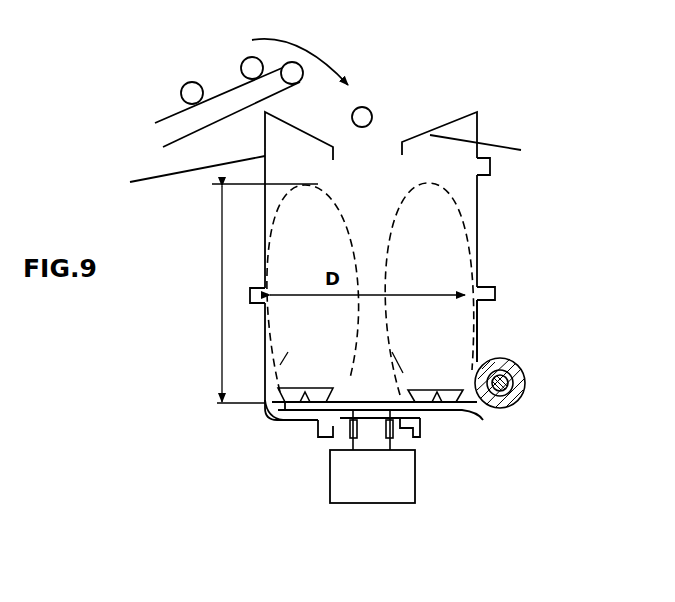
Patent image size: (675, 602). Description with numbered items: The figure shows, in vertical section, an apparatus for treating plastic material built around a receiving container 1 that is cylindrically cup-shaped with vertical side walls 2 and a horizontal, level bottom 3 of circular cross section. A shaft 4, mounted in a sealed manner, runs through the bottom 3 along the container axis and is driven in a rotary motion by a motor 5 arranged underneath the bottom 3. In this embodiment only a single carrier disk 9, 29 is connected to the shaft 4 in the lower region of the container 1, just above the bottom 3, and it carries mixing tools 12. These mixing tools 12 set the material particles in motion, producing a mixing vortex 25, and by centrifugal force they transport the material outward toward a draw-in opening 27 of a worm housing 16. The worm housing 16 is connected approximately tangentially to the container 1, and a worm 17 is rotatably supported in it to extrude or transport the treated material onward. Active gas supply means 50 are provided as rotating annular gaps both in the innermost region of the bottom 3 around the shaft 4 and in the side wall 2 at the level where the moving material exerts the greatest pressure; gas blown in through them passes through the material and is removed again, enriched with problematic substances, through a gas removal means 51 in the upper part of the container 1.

The receiving container 1 is at (484, 129).
The side wall 2 is at (480, 190).
The bottom 3 is at (483, 421).
The shaft 4 is at (370, 440).
The motor 5 is at (393, 487).
The carrier disk 9 is at (300, 407).
The carrier disk 29 is at (230, 466).
The mixing tools 12 is at (296, 395).
The worm housing 16 is at (523, 367).
The worm 17 is at (526, 388).
The mixing vortex 25 is at (392, 215).
The draw-in opening 27 is at (480, 360).
The active gas supply means 50 is at (257, 290).
The gas removal means 51 is at (530, 161).